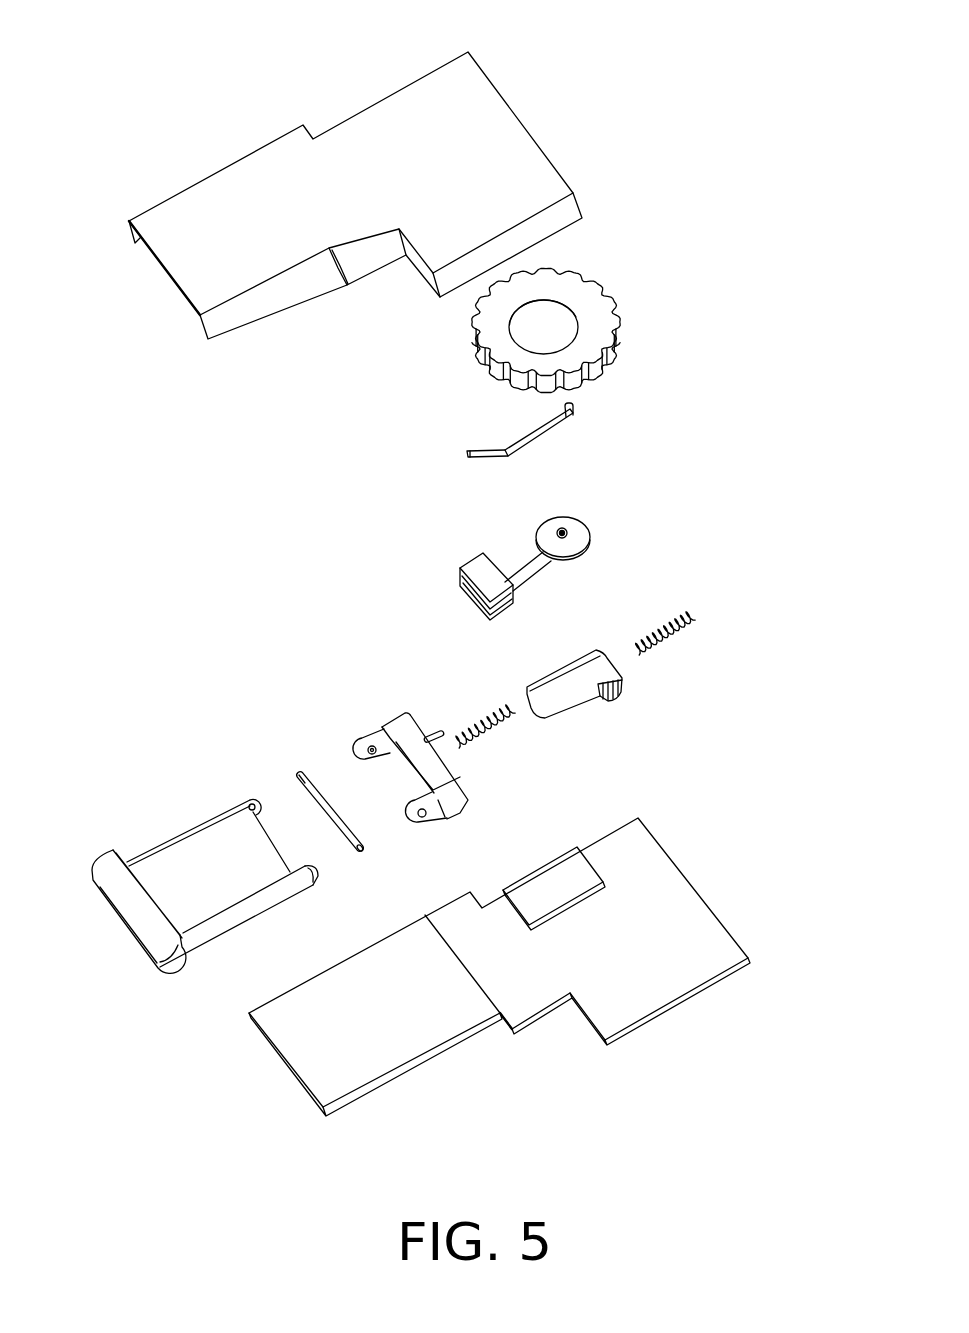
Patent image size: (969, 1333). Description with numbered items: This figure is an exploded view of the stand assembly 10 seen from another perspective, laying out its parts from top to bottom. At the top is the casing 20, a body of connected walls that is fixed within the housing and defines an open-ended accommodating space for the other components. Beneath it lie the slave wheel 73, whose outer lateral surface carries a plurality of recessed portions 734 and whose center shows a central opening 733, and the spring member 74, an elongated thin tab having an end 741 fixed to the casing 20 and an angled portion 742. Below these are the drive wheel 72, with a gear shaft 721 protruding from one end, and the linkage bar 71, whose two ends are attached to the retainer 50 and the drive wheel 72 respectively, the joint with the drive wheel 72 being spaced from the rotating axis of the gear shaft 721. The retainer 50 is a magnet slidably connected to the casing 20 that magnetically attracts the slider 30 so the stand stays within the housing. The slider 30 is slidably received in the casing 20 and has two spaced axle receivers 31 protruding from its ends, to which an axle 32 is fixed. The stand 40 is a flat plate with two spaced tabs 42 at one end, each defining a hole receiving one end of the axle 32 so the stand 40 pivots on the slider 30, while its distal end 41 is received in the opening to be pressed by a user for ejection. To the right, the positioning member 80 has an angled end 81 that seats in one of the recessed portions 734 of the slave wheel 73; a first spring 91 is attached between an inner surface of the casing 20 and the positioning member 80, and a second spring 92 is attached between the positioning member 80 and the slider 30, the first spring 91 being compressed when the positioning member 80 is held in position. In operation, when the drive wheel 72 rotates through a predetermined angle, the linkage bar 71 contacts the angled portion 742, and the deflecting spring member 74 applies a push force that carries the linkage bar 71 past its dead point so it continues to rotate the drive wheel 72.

The stand assembly 10 is at (160, 45).
The casing 20 is at (408, 142).
The slider 30 is at (355, 717).
The axle receivers 31 is at (408, 738).
The axle 32 is at (320, 797).
The stand 40 is at (177, 829).
The distal end 41 is at (110, 893).
The tabs 42 is at (250, 807).
The retainer 50 is at (510, 593).
The linkage bar 71 is at (533, 567).
The drive wheel 72 is at (628, 515).
The gear shaft 721 is at (564, 532).
The slave wheel 73 is at (595, 316).
The through hole 733 is at (550, 301).
The recessed portions 734 is at (614, 342).
The spring member 74 is at (622, 422).
The end 741 is at (572, 407).
The angled portion 742 is at (493, 456).
The positioning member 80 is at (630, 701).
The angled end 81 is at (623, 679).
The first spring 91 is at (694, 617).
The second spring 92 is at (484, 728).